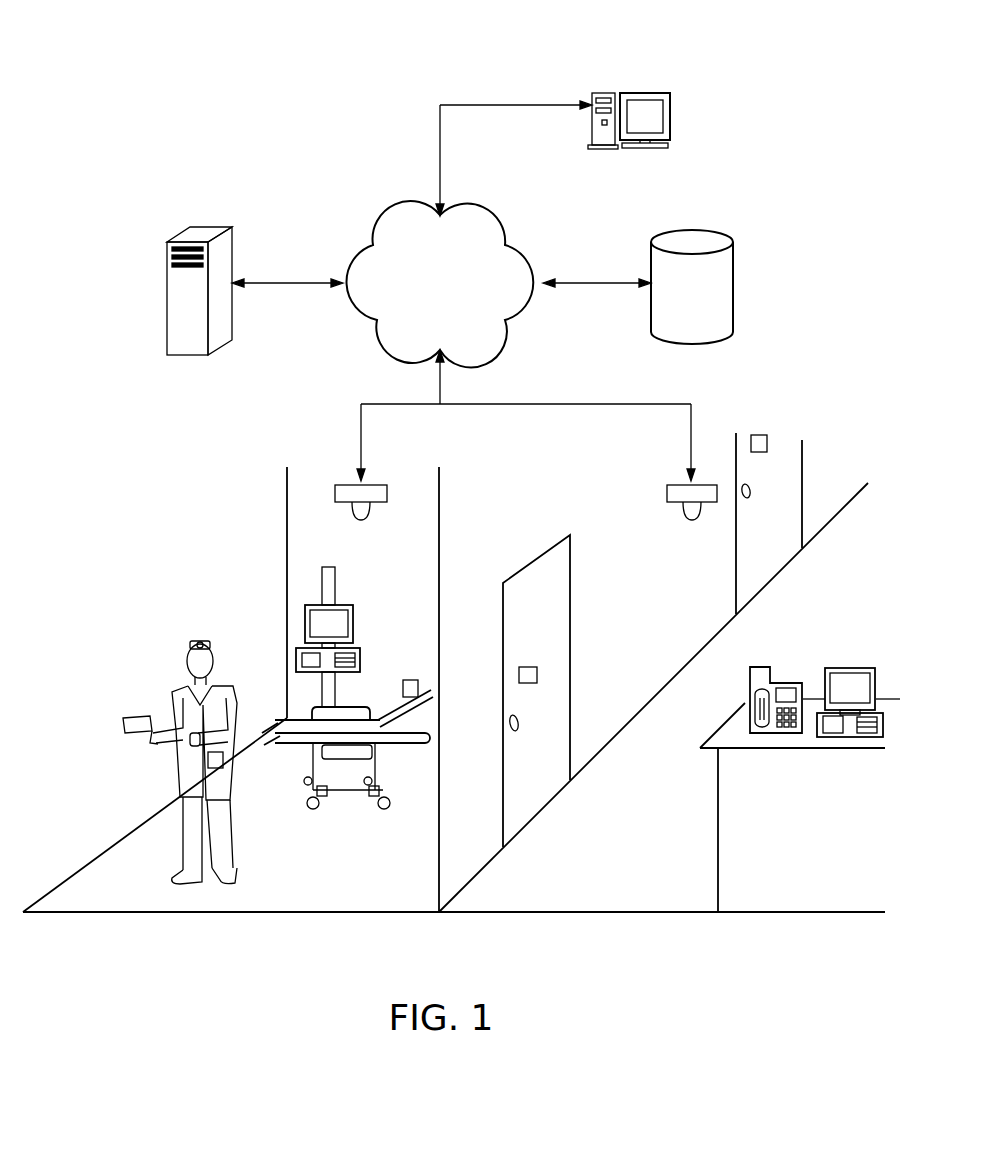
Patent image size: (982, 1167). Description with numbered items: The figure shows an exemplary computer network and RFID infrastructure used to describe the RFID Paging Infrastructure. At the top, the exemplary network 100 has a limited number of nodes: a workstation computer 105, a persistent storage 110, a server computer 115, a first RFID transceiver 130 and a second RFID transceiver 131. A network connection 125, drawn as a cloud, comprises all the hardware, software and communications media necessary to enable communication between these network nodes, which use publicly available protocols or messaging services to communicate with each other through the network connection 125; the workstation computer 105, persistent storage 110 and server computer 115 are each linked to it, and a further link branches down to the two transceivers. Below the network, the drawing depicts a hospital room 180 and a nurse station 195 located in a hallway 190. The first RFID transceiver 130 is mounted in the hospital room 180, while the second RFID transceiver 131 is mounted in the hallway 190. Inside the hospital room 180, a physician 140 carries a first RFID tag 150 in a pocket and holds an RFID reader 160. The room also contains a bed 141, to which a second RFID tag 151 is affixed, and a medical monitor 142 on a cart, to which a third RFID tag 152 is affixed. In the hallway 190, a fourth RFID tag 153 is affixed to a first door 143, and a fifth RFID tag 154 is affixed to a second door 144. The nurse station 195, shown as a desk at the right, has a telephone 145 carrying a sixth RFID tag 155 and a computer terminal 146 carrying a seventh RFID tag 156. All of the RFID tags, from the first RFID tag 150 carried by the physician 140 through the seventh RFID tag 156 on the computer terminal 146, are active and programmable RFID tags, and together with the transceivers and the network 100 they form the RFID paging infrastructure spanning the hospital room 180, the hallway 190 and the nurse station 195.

The network 100 is at (292, 122).
The workstation computer 105 is at (648, 93).
The persistent storage 110 is at (733, 277).
The server computer 115 is at (167, 263).
The network connection 125 is at (460, 300).
The first RFID transceiver 130 is at (373, 487).
The second RFID transceiver 131 is at (680, 488).
The physician 140 is at (200, 641).
The bed 141 is at (348, 736).
The medical monitor 142 is at (340, 610).
The first door 143 is at (566, 694).
The second door 144 is at (781, 486).
The telephone 145 is at (790, 690).
The computer terminal 146 is at (853, 675).
The first RFID tag 150 is at (223, 757).
The second RFID tag 151 is at (410, 682).
The third RFID tag 152 is at (302, 657).
The fourth RFID tag 153 is at (527, 667).
The fifth RFID tag 154 is at (758, 435).
The sixth RFID tag 155 is at (758, 667).
The seventh RFID tag 156 is at (828, 736).
The RFID reader 160 is at (138, 716).
The hospital room 180 is at (198, 540).
The hallway 190 is at (636, 890).
The nurse station 195 is at (797, 890).